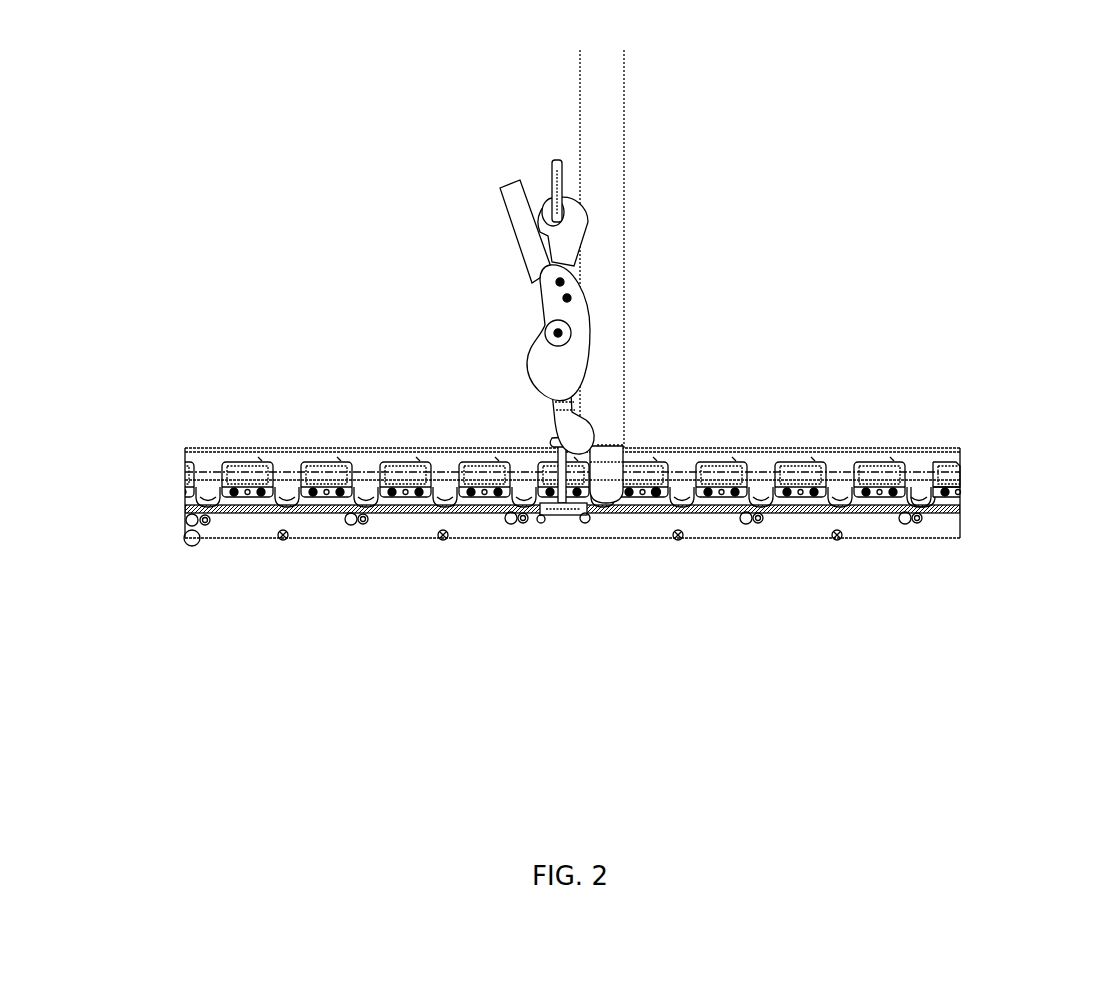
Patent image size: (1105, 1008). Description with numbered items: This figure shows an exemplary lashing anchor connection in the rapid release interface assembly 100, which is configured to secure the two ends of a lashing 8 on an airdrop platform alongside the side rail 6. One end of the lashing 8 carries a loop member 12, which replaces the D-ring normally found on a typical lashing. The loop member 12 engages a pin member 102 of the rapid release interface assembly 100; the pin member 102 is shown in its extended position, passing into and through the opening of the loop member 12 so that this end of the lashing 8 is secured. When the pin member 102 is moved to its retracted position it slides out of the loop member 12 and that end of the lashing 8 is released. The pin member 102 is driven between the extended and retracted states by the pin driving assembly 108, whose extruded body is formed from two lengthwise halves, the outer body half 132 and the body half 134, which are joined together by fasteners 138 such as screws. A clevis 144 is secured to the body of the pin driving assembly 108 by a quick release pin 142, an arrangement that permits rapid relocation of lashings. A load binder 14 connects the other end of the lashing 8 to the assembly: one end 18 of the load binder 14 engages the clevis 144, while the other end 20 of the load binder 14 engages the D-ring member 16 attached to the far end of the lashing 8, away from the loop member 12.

The side rail 6 is at (237, 528).
The lashing 8 is at (623, 148).
The loop member 12 is at (607, 473).
The load binder 14 is at (545, 305).
The D-ring member 16 is at (557, 160).
The end of the load binder 18 is at (552, 438).
The other end of the load binder 20 is at (543, 197).
The rapid release interface assembly 100 is at (323, 522).
The pin member 102 is at (680, 483).
The pin driving assembly 108 is at (328, 428).
The outer body half 132 is at (958, 482).
The body half 134 is at (957, 467).
The fasteners 138 is at (657, 494).
The quick release pin 142 is at (562, 503).
The clevis 144 is at (562, 443).